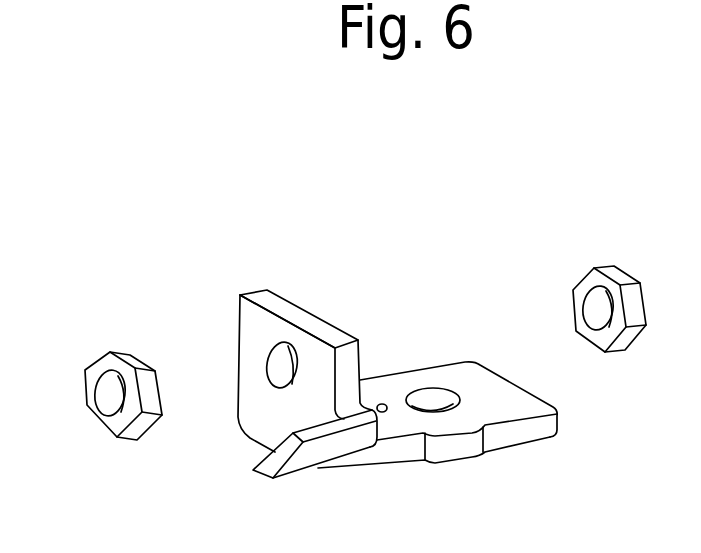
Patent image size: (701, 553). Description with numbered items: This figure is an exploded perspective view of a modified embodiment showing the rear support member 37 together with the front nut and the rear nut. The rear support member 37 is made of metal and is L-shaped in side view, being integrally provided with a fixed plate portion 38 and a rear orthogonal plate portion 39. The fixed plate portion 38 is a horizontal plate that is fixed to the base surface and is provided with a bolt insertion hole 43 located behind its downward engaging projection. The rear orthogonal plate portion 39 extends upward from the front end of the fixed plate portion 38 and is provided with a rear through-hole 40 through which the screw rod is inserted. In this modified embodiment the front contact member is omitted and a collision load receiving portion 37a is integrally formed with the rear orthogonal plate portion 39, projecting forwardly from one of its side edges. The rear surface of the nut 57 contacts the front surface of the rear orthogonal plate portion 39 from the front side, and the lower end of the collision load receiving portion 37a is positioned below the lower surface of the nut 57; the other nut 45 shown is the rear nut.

The rear support member 37 is at (306, 320).
The collision load receiving portion 37a is at (312, 456).
The fixed plate portion 38 is at (509, 434).
The rear orthogonal plate portion 39 is at (250, 328).
The rear through-hole 40 is at (268, 375).
The bolt insertion hole 43 is at (431, 396).
The nut 45 is at (582, 282).
The nut 57 is at (93, 366).